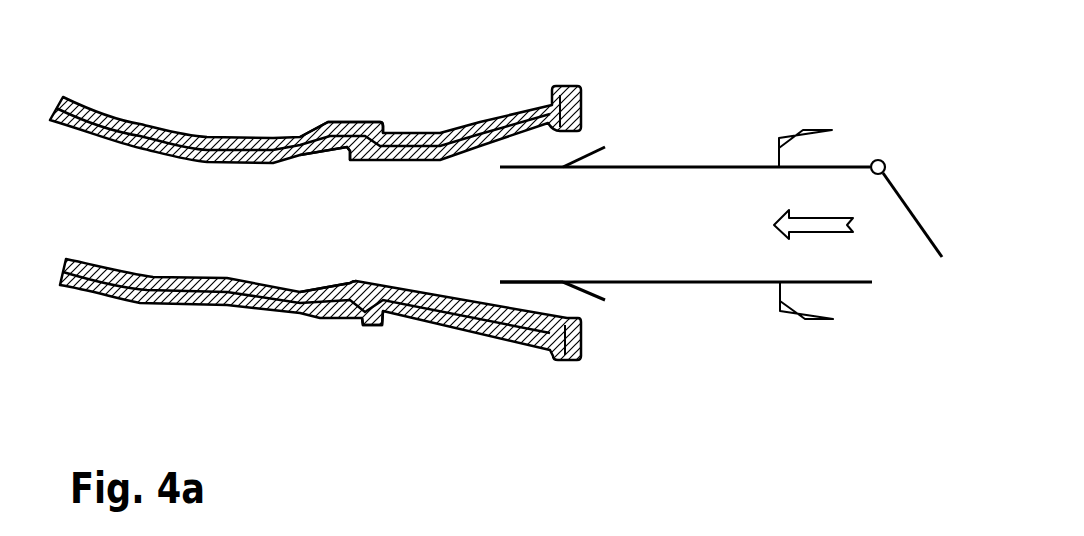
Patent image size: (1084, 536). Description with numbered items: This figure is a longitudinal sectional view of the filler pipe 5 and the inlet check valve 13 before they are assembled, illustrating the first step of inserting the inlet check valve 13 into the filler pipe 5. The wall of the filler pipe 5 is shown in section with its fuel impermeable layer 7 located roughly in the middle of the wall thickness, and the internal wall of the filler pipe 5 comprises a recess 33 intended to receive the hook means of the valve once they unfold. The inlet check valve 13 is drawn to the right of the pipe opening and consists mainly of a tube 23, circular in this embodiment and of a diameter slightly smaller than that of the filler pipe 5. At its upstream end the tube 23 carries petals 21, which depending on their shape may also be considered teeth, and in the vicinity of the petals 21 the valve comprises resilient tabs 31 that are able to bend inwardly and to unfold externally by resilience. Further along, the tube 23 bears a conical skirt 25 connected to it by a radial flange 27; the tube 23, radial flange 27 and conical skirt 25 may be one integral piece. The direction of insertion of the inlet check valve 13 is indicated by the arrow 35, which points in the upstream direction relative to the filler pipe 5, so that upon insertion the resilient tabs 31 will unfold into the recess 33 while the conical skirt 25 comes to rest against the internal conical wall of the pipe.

The filler pipe 5 is at (315, 184).
The fuel impermeable layer 7 is at (162, 135).
The inlet check valve 13 is at (667, 152).
The petals 21 is at (528, 282).
The tube 23 is at (682, 283).
The conical skirt 25 is at (803, 147).
The radial flange 27 is at (777, 284).
The resilient tabs 31 is at (592, 300).
The recess 33 is at (308, 170).
The arrow 35 is at (833, 223).